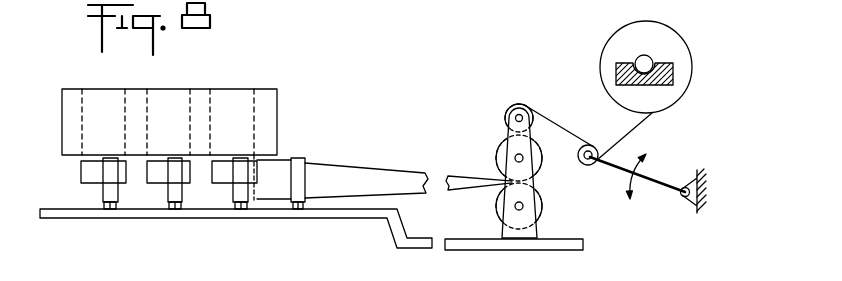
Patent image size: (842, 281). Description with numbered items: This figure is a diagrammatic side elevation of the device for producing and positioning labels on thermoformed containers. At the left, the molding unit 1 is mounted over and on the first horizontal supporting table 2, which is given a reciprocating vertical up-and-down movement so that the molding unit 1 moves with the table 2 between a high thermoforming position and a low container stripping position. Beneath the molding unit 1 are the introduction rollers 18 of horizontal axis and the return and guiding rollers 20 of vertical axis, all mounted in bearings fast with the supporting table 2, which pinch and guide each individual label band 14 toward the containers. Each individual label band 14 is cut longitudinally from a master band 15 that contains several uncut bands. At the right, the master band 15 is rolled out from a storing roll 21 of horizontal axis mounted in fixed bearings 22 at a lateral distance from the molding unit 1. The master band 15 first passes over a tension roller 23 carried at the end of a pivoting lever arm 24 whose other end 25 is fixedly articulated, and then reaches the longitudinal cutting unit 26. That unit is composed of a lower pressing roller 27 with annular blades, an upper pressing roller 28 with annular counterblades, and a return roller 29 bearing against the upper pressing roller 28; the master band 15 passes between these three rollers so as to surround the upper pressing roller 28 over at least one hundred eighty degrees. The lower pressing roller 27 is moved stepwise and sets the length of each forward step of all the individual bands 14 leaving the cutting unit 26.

The molding unit 1 is at (270, 100).
The first horizontal supporting table 2 is at (405, 249).
The individual label band 14 is at (362, 177).
The master band 15 is at (558, 130).
The introduction roller 18 is at (88, 184).
The return and guiding roller 20 is at (105, 198).
The storing roll 21 is at (668, 40).
The fixed bearings 22 is at (668, 78).
The tension roller 23 is at (595, 147).
The pivoting lever arm 24 is at (663, 175).
The other end of lever arm 25 is at (677, 198).
The longitudinal cutting unit 26 is at (483, 142).
The lower pressing roller 27 is at (541, 205).
The upper pressing roller 28 is at (539, 158).
The return roller 29 is at (510, 109).